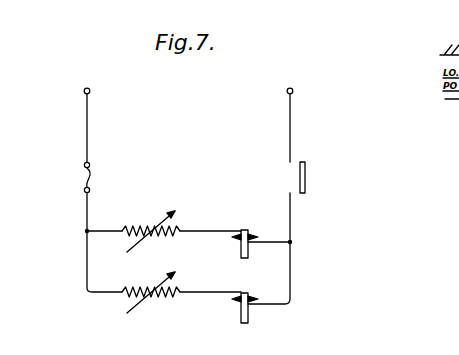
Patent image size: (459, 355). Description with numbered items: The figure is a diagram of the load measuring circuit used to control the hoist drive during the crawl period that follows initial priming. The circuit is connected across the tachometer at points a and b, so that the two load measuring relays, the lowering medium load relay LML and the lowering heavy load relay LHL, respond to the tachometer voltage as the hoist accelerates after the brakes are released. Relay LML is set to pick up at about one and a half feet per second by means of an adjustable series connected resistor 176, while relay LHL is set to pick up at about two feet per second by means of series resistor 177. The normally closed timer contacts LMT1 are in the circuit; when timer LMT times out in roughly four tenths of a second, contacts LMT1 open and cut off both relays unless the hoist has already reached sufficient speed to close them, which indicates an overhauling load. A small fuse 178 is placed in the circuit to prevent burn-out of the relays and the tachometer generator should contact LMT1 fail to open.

The tachometer connection point a is at (86, 84).
The tachometer connection point b is at (289, 84).
The fuse 178 is at (91, 178).
The adjustable series connected resistor 176 is at (157, 218).
The series resistor 177 is at (157, 280).
The timer contacts LMT1 is at (306, 176).
The lowering medium load relay LML is at (252, 235).
The lowering heavy load relay LHL is at (252, 297).